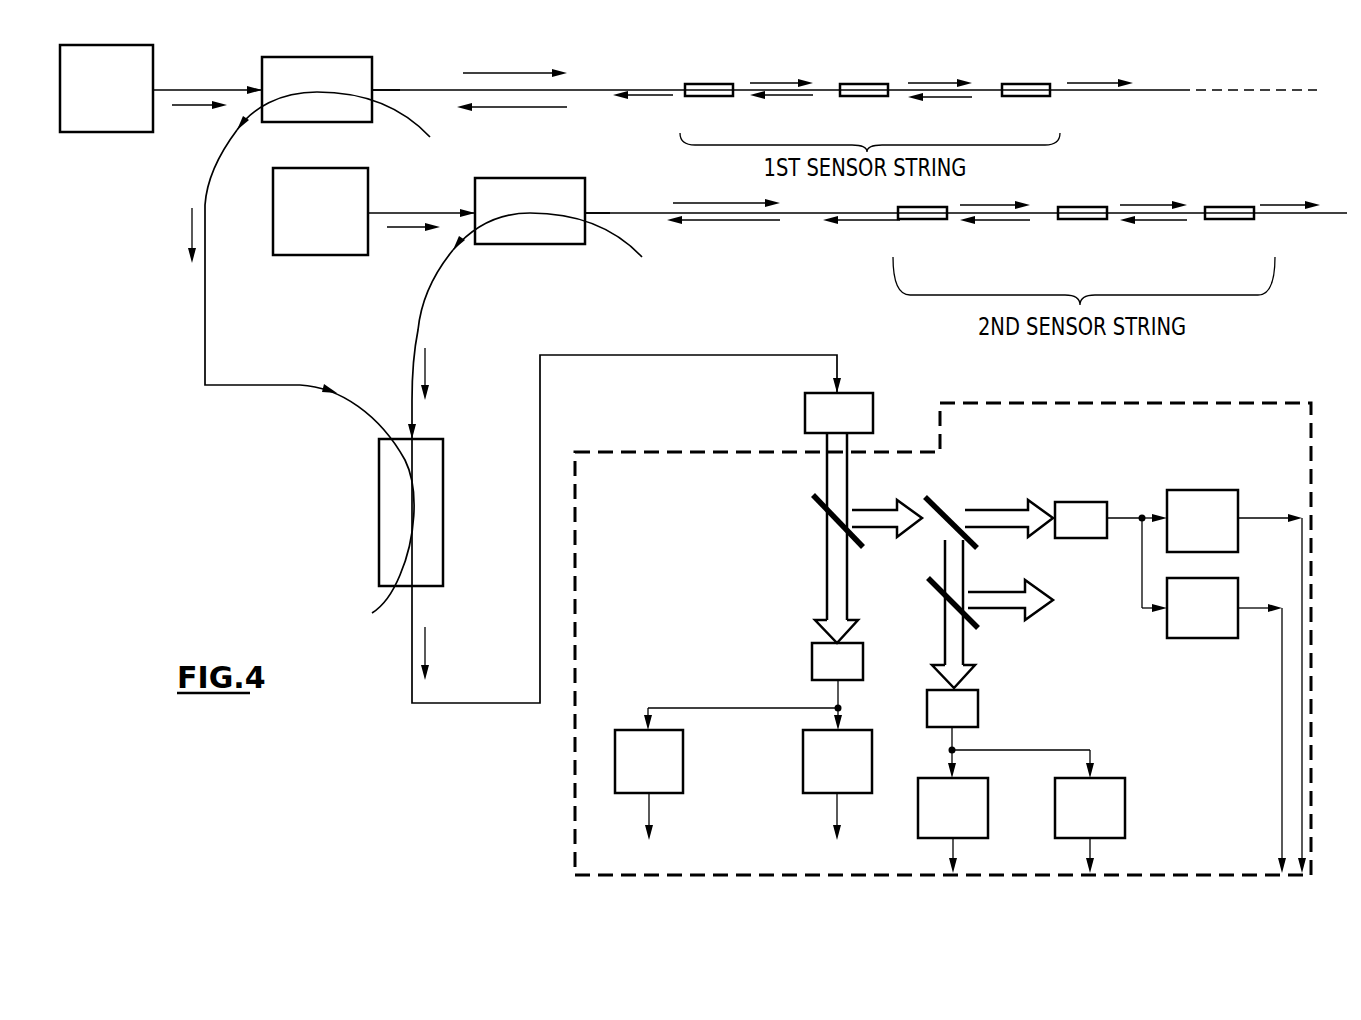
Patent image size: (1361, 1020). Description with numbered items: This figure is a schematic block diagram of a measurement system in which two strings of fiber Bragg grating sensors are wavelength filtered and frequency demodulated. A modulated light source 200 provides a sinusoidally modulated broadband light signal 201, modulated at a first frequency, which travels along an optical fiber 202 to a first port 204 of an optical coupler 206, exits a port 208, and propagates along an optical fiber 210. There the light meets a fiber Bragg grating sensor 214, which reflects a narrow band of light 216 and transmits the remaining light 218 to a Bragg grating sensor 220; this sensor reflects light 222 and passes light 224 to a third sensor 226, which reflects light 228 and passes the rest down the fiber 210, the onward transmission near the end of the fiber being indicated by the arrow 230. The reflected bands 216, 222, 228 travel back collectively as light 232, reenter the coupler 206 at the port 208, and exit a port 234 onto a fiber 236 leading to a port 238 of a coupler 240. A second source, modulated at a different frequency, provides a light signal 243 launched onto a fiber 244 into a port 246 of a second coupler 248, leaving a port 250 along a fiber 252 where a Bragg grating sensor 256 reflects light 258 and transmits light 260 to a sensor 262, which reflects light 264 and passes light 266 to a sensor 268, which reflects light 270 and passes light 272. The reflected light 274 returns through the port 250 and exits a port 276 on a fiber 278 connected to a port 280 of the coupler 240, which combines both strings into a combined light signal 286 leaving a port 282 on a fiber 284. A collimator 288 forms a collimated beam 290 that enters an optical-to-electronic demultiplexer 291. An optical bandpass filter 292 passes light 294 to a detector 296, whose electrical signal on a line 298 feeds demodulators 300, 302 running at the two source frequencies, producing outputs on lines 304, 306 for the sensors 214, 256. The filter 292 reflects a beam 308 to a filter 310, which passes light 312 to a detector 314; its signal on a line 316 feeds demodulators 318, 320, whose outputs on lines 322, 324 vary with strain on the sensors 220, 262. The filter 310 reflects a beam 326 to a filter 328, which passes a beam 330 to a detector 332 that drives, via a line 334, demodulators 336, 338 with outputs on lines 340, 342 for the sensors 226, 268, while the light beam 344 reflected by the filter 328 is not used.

The modulated light source 200 is at (128, 137).
The modulated broadband light signal 201 is at (197, 107).
The optical fiber 202 is at (220, 85).
The first port 204 is at (262, 80).
The optical 2x2 coupler 206 is at (340, 117).
The port 208 is at (372, 90).
The optical fiber 210 is at (400, 88).
The fiber Bragg grating sensor 214 is at (717, 85).
The reflected light 216 is at (653, 102).
The transmitted light 218 is at (760, 80).
The Bragg grating sensor 220 is at (857, 85).
The reflected light 222 is at (807, 100).
The transmitted light 224 is at (930, 78).
The Bragg grating sensor 226 is at (1022, 85).
The reflected light 228 is at (963, 102).
The transmitted light 230 is at (1092, 80).
The reflected light 232 is at (485, 113).
The port 234 is at (258, 118).
The fiber 236 is at (202, 350).
The port 238 is at (378, 437).
The coupler 240 is at (440, 503).
The modulated broadband light signal 243 is at (412, 228).
The fiber 244 is at (435, 208).
The port 246 is at (343, 260).
The 2x2 coupler 248 is at (545, 222).
The port 250 is at (585, 210).
The fiber 252 is at (610, 210).
The Bragg grating sensor 256 is at (888, 208).
The reflected light 258 is at (862, 225).
The transmitted light 260 is at (990, 203).
The Bragg grating sensor 262 is at (1073, 207).
The reflected light 264 is at (1012, 227).
The transmitted light 266 is at (1143, 203).
The Bragg grating sensor 268 is at (1223, 207).
The reflected light 270 is at (1167, 223).
The transmitted light 272 is at (1280, 205).
The reflected light 274 is at (740, 223).
The port 276 is at (475, 250).
The fiber 278 is at (410, 315).
The port 280 is at (420, 435).
The port 282 is at (420, 590).
The fiber 284 is at (410, 655).
The combined light signal 286 is at (428, 648).
The collimator 288 is at (805, 417).
The collimated beam 290 is at (832, 475).
The optical-to-electronic demultiplexer 291 is at (1085, 408).
The optical bandpass filter 292 is at (813, 503).
The passed light 294 is at (830, 585).
The detector 296 is at (810, 670).
The line 298 is at (833, 702).
The demodulator 300 is at (685, 767).
The demodulator 302 is at (807, 747).
The line 304 is at (648, 815).
The line 306 is at (833, 813).
The reflected light beam 308 is at (895, 507).
The filter 310 is at (937, 497).
The passed light 312 is at (977, 510).
The detector 314 is at (1082, 502).
The line 316 is at (1122, 522).
The demodulator 318 is at (1218, 490).
The demodulator 320 is at (1165, 625).
The line 322 is at (1257, 523).
The line 324 is at (1257, 612).
The reflected light beam 326 is at (947, 557).
The filter 328 is at (928, 585).
The passed light beam 330 is at (963, 657).
The detector 332 is at (978, 697).
The line 334 is at (952, 742).
The demodulator 336 is at (920, 793).
The demodulator 338 is at (1055, 798).
The line 340 is at (950, 848).
The line 342 is at (1088, 850).
The reflected light beam 344 is at (1013, 590).